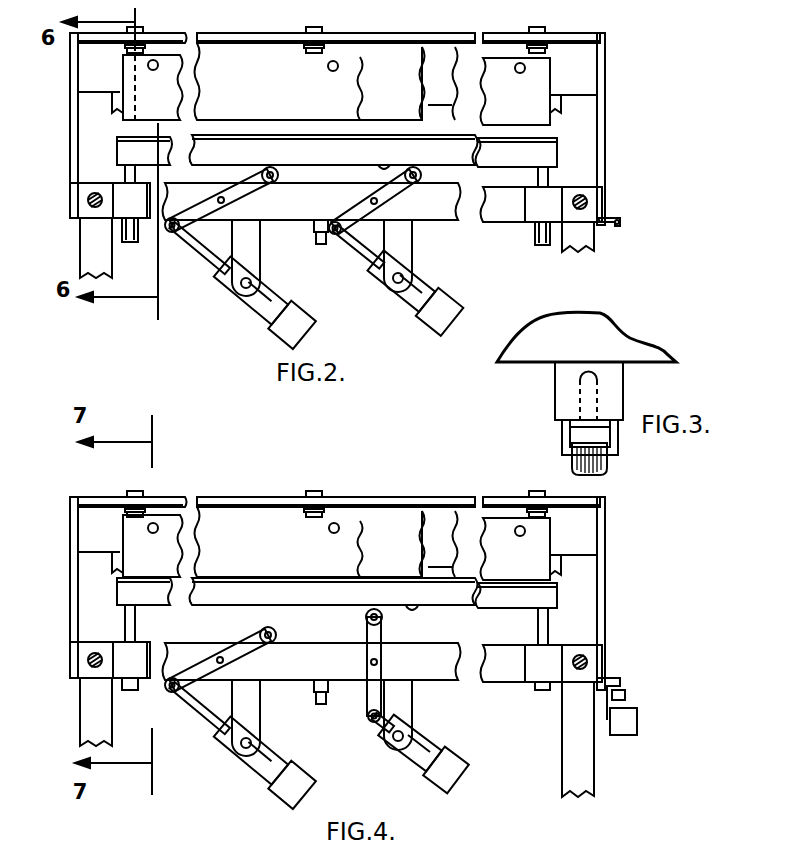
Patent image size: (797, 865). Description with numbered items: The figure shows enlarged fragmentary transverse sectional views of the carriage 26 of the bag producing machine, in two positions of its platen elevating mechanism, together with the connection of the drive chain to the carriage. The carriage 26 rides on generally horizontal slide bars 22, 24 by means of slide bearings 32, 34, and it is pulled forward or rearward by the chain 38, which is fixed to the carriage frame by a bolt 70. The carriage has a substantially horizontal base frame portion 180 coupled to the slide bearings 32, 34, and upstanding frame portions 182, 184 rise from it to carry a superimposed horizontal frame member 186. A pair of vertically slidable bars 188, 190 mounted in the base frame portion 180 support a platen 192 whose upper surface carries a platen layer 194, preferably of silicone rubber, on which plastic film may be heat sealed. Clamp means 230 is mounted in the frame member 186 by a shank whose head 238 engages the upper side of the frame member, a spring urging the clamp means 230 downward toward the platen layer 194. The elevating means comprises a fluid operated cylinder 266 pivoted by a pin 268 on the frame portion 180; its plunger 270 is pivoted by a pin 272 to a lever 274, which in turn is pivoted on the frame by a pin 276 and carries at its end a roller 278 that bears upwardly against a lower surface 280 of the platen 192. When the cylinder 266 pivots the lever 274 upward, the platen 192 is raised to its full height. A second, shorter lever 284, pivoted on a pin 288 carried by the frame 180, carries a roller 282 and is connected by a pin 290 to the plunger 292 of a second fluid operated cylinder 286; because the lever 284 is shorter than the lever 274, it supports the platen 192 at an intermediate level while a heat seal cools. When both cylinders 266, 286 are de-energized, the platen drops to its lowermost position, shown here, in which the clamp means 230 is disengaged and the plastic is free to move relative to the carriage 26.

In FIG. 2, the slide bar 22 is at (590, 220).
In FIG. 4, the slide bar 22 is at (606, 674).
In FIG. 2, the slide bar 24 is at (88, 207).
In FIG. 4, the slide bar 24 is at (88, 664).
In FIG. 2, the carriage 26 is at (256, 32).
In FIG. 2, the slide bearing 32 is at (604, 198).
In FIG. 4, the slide bearing 32 is at (605, 656).
In FIG. 2, the slide bearing 34 is at (70, 195).
In FIG. 4, the slide bearing 34 is at (75, 650).
In FIG. 3, the chain 38 is at (556, 433).
In FIG. 3, the bolt 70 is at (570, 463).
In FIG. 2, the base frame portion 180 is at (290, 222).
In FIG. 4, the base frame portion 180 is at (340, 648).
In FIG. 2, the upstanding frame portion 182 is at (602, 162).
In FIG. 4, the upstanding frame portion 182 is at (602, 592).
In FIG. 2, the upstanding frame portion 184 is at (72, 129).
In FIG. 4, the upstanding frame portion 184 is at (72, 556).
In FIG. 4, the superimposed horizontal frame member 186 is at (372, 500).
In FIG. 4, the vertically slidable bar 188 is at (128, 690).
In FIG. 4, the vertically slidable bar 190 is at (535, 628).
In FIG. 2, the platen 192 is at (510, 194).
In FIG. 4, the platen 192 is at (437, 598).
In FIG. 2, the platen layer 194 is at (353, 135).
In FIG. 4, the platen layer 194 is at (288, 578).
In FIG. 2, the clamp means 230 is at (356, 68).
In FIG. 2, the head 238 is at (147, 29).
In FIG. 4, the head 238 is at (145, 492).
In FIG. 2, the fluid operated cylinder 266 is at (275, 318).
In FIG. 4, the fluid operated cylinder 266 is at (268, 770).
In FIG. 2, the pin 268 is at (232, 305).
In FIG. 4, the pin 268 is at (238, 756).
In FIG. 2, the plunger 270 is at (207, 255).
In FIG. 4, the plunger 270 is at (214, 716).
In FIG. 2, the pin 272 is at (176, 218).
In FIG. 2, the lever 274 is at (198, 208).
In FIG. 4, the lever 274 is at (237, 643).
In FIG. 2, the pin 276 is at (226, 201).
In FIG. 2, the roller 278 is at (279, 183).
In FIG. 4, the roller 278 is at (274, 628).
In FIG. 2, the lower surface 280 is at (389, 173).
In FIG. 4, the lower surface 280 is at (412, 585).
In FIG. 2, the roller 282 is at (428, 174).
In FIG. 4, the roller 282 is at (375, 609).
In FIG. 2, the lever 284 is at (380, 202).
In FIG. 4, the lever 284 is at (384, 638).
In FIG. 2, the fluid operated cylinder 286 is at (423, 306).
In FIG. 4, the fluid operated cylinder 286 is at (422, 762).
In FIG. 4, the pin 288 is at (380, 668).
In FIG. 4, the pin 290 is at (368, 716).
In FIG. 2, the plunger 292 is at (367, 255).
In FIG. 4, the plunger 292 is at (371, 728).